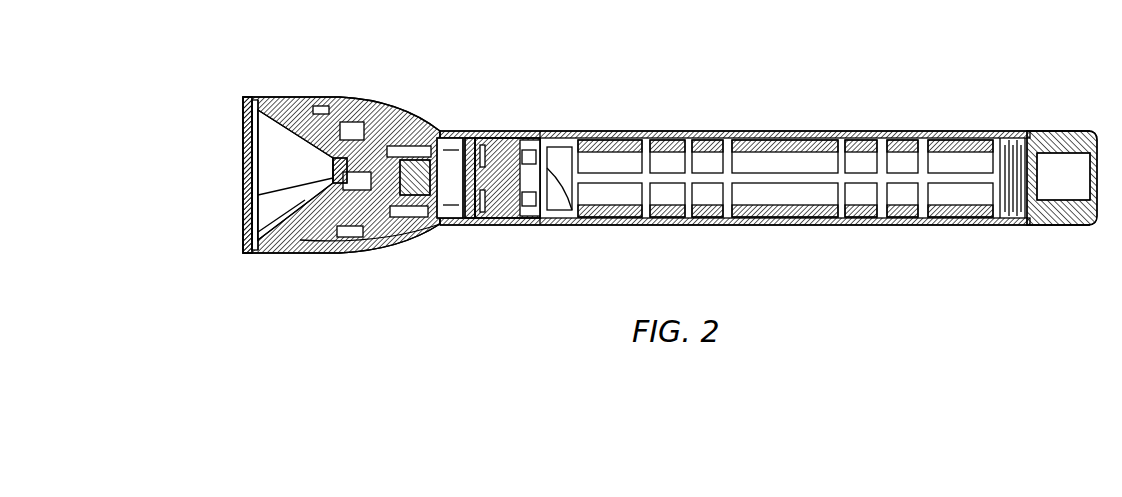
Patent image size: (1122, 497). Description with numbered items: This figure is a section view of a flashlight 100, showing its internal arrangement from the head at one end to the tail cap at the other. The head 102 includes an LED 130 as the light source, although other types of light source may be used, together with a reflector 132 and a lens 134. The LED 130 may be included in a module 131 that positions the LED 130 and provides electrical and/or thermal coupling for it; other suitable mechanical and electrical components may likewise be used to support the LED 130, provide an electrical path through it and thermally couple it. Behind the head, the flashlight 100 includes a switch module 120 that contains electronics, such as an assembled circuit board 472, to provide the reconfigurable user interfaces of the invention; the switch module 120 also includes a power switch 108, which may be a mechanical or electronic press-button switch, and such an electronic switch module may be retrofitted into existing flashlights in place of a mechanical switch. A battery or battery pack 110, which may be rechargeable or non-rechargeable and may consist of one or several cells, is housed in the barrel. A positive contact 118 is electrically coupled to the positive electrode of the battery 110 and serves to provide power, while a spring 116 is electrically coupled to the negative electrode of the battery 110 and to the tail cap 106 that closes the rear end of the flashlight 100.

The flashlight 100 is at (767, 84).
The head 102 is at (298, 110).
The tail cap 106 is at (1078, 130).
The power switch 108 is at (485, 128).
The battery 110 is at (790, 193).
The spring 116 is at (990, 130).
The positive contact 118 is at (580, 225).
The switch module 120 is at (470, 128).
The LED 130 is at (243, 200).
The module 131 is at (243, 228).
The reflector 132 is at (330, 165).
The lens 134 is at (243, 128).
The assembled circuit board 472 is at (457, 225).